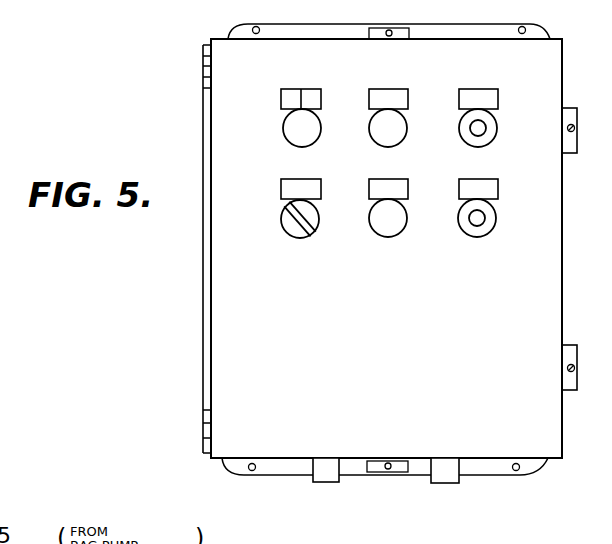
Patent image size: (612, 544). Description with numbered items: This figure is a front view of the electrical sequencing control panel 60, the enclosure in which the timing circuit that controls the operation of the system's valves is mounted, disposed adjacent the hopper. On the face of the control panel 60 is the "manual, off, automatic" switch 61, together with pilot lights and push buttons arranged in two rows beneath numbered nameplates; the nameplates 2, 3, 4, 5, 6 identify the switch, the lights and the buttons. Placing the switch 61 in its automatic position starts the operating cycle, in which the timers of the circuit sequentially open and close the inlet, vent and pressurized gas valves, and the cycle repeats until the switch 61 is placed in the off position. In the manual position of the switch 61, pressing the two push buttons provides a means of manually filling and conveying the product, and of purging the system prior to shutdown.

The electrical sequencing control panel 60 is at (368, 253).
The manual, off, automatic switch 61 is at (313, 231).
The nameplate for selector switch SS1 2 is at (315, 216).
The nameplate for pilot light P2 3 is at (397, 124).
The nameplate for pilot light P3 4 is at (395, 216).
The nameplate for push button PB1 5 is at (491, 124).
The nameplate for push button PB2 6 is at (491, 215).